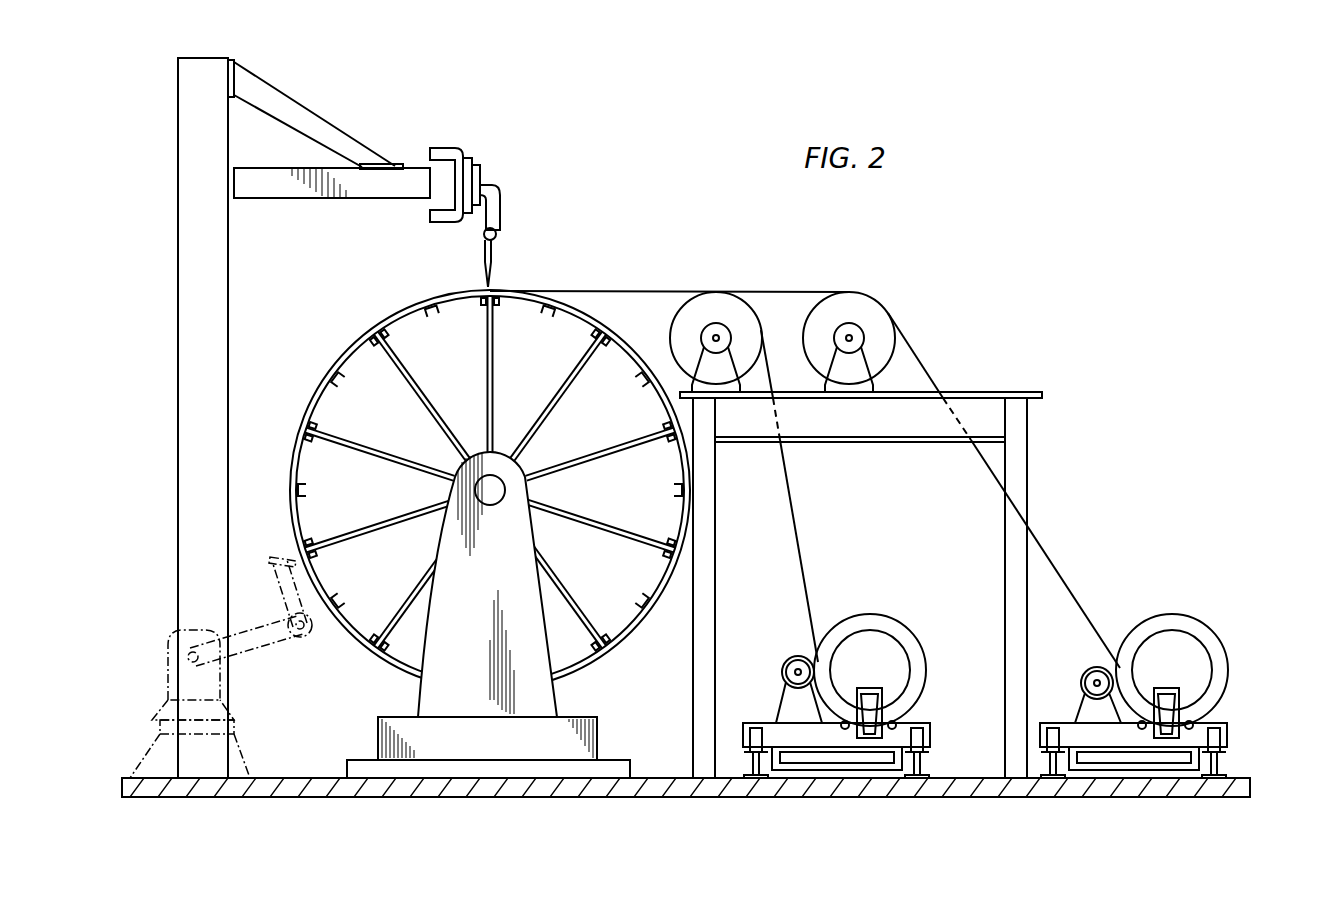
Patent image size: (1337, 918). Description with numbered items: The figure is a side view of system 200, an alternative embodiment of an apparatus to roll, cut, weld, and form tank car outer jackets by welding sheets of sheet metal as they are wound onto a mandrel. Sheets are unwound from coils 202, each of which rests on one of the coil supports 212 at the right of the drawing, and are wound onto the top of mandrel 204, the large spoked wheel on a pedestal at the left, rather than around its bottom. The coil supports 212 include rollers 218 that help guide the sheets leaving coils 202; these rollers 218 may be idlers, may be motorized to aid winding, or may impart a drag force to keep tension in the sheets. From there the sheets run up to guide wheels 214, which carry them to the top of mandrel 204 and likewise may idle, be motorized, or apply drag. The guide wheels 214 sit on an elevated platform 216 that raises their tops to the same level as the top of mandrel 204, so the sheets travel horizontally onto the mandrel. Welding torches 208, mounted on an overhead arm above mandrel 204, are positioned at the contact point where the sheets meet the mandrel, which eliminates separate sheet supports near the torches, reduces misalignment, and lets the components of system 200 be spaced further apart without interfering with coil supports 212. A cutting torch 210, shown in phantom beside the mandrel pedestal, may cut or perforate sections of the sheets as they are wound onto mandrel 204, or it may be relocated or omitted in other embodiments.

The system 200 is at (1163, 352).
The coils 202 is at (870, 614).
The mandrel 204 is at (404, 316).
The welding torches 208 is at (504, 212).
The cutting torch 210 is at (260, 658).
The coil supports 212 is at (945, 735).
The guide wheels 214 is at (716, 291).
The elevated platform 216 is at (1029, 483).
The rollers 218 is at (794, 656).